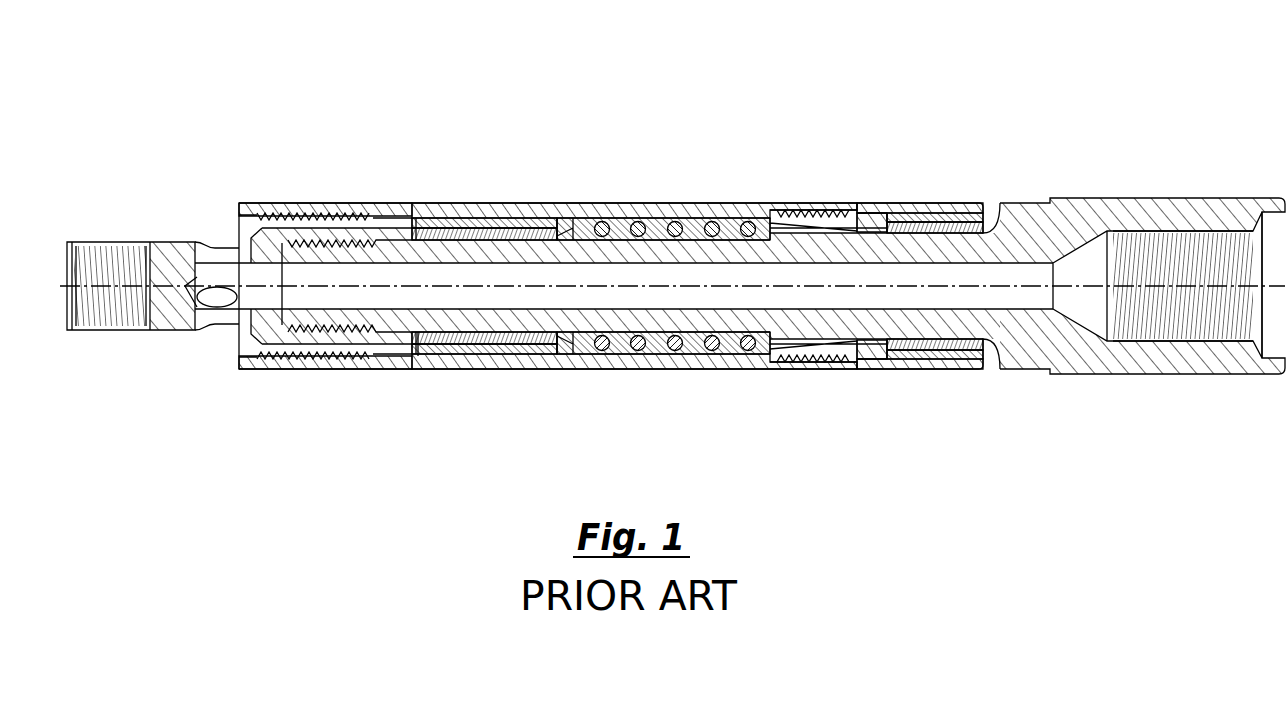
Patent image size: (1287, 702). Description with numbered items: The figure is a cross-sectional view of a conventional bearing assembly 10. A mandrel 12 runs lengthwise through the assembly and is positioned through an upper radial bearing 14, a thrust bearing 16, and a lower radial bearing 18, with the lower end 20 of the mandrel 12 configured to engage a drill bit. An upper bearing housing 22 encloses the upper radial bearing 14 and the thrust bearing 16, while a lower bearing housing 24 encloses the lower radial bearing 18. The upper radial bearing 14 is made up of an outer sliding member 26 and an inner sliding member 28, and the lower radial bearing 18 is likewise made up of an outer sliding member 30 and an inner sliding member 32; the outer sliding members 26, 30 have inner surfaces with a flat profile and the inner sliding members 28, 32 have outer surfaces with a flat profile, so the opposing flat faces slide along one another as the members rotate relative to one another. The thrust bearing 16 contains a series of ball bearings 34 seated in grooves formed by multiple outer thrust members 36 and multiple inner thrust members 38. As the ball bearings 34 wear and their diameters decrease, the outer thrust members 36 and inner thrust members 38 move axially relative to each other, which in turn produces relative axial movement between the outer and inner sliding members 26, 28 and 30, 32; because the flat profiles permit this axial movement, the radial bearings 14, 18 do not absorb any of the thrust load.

The bearing assembly 10 is at (763, 95).
The mandrel 12 is at (357, 253).
The upper radial bearing 14 is at (503, 216).
The thrust bearing 16 is at (650, 206).
The lower radial bearing 18 is at (918, 214).
The lower end 20 is at (1225, 215).
The upper bearing housing 22 is at (315, 368).
The lower bearing housing 24 is at (963, 368).
The outer sliding member 26 is at (493, 351).
The inner sliding member 28 is at (420, 356).
The outer sliding member 30 is at (895, 350).
The inner sliding member 32 is at (930, 344).
The ball bearings 34 is at (597, 351).
The outer thrust members 36 is at (658, 349).
The inner thrust members 38 is at (698, 351).